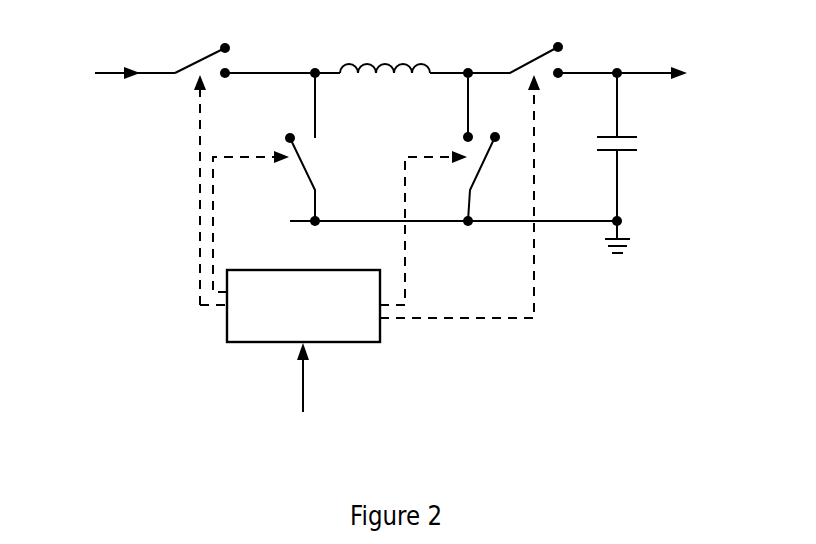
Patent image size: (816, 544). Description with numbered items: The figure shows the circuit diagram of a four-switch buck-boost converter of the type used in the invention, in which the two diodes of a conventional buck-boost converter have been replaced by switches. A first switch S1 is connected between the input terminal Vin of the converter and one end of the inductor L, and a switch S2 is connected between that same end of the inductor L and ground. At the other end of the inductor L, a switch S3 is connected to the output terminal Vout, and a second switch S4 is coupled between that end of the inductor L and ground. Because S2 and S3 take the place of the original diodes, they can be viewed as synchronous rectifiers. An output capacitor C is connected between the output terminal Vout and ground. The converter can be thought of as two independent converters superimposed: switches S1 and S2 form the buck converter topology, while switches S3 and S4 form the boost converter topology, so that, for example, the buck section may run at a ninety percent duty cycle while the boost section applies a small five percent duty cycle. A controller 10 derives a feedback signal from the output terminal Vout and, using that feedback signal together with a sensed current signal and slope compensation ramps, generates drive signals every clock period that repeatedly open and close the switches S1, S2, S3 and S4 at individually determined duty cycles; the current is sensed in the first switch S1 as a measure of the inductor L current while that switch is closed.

The controller 10 is at (227, 326).
The first switch S1 is at (245, 156).
The switch S2 is at (276, 182).
The switch S3 is at (498, 163).
The second switch S4 is at (448, 189).
The inductor L is at (391, 51).
The output capacitor C is at (633, 147).
The input terminal Vin is at (117, 75).
The output terminal Vout is at (509, 253).